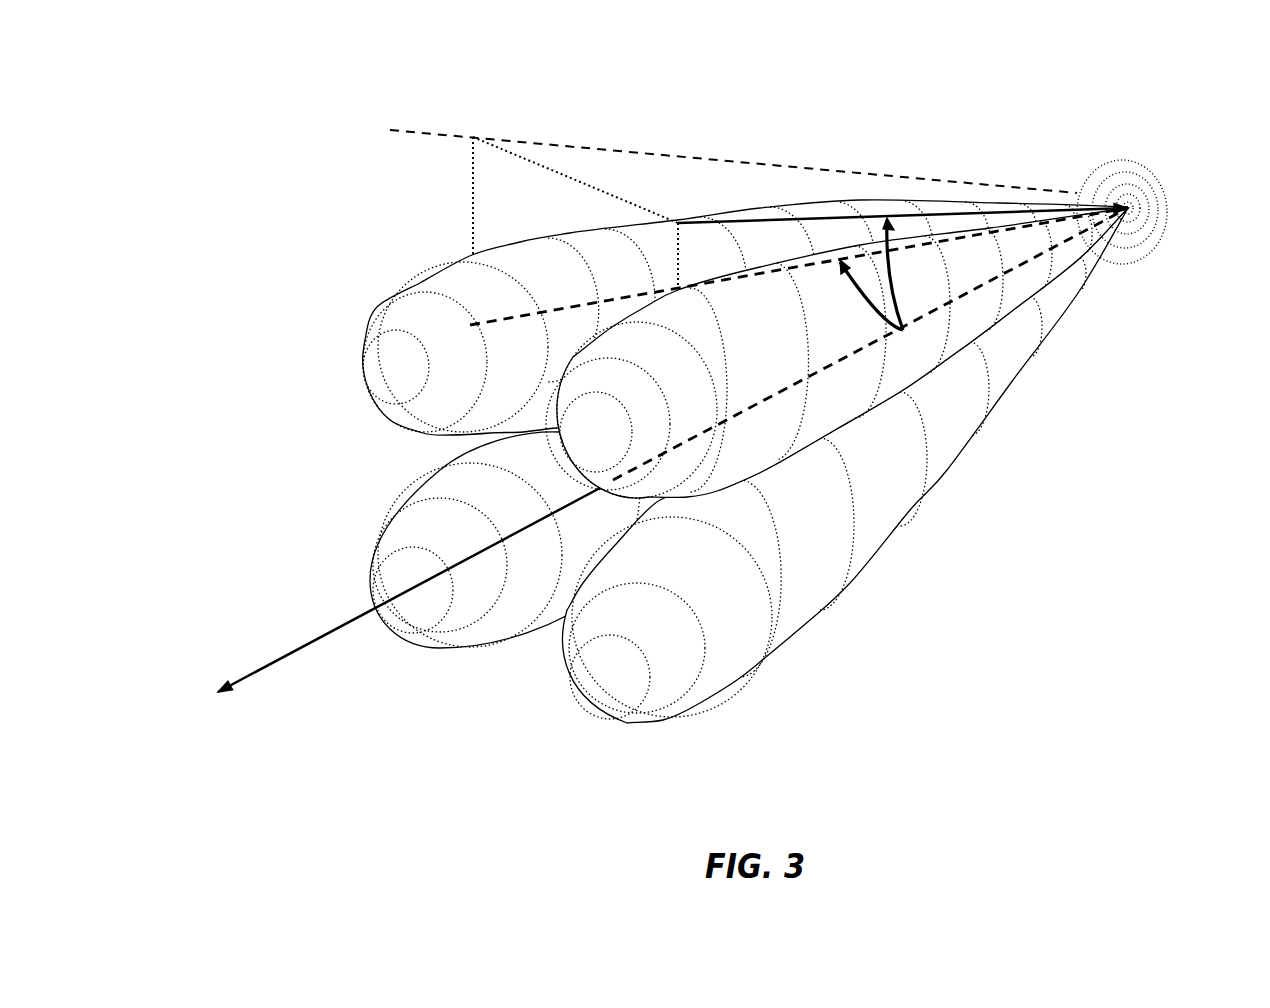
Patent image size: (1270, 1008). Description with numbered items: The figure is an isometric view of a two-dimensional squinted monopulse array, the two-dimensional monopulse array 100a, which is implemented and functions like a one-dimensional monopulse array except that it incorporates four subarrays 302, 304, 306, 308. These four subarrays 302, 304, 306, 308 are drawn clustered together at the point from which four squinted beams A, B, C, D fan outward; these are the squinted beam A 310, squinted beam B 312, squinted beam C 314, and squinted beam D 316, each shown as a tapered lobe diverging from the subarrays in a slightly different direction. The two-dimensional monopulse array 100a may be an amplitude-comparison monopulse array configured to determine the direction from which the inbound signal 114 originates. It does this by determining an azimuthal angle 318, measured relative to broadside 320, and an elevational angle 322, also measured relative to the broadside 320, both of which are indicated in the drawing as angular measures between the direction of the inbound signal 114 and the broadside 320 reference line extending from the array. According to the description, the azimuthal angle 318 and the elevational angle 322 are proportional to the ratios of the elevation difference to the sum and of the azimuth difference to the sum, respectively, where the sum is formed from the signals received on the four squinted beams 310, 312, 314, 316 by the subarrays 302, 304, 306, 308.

The 2D monopulse array 100a is at (651, 411).
The inbound signal 114 is at (593, 147).
The subarray 302 is at (1077, 188).
The subarray 304 is at (1110, 173).
The subarray 306 is at (1143, 197).
The subarray 308 is at (1137, 233).
The squinted beam A 310 is at (472, 620).
The squinted beam B 312 is at (428, 313).
The squinted beam C 314 is at (638, 408).
The squinted beam D 316 is at (670, 688).
The azimuthal angle 318 is at (858, 283).
The broadside 320 is at (318, 612).
The elevational angle 322 is at (885, 285).